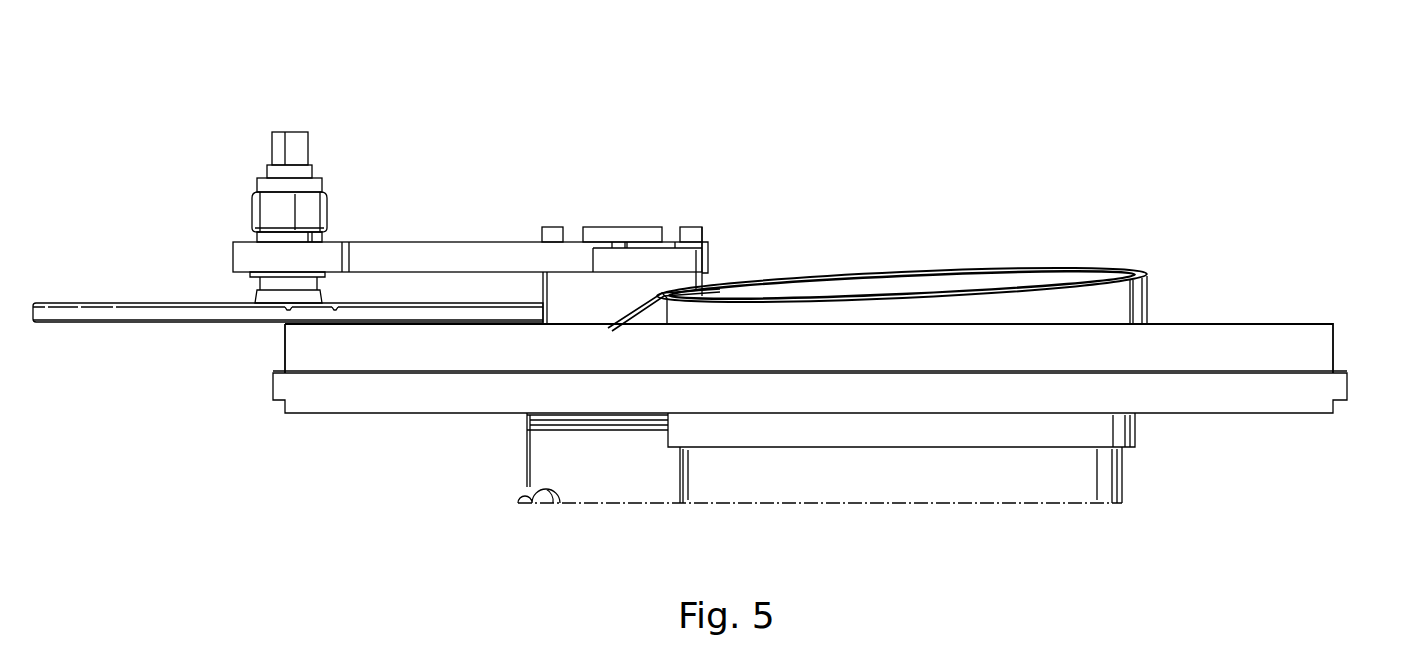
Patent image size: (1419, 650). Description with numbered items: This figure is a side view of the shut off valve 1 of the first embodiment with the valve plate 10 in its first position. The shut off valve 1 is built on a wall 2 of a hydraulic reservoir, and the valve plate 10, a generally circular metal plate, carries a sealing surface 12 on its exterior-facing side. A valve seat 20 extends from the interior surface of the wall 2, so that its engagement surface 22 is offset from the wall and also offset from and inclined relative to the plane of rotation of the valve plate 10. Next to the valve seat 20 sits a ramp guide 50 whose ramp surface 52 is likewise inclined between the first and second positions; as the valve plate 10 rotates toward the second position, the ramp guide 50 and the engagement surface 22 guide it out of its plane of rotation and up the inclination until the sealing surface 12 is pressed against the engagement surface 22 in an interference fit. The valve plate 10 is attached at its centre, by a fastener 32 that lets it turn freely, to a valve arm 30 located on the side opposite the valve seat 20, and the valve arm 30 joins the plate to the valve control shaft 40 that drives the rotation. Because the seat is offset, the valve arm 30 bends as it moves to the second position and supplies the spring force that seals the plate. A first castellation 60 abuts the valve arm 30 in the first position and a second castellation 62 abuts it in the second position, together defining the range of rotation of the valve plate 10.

The shut off valve 1 is at (1197, 134).
The wall 2 is at (1350, 349).
The valve plate 10 is at (124, 323).
The sealing surface 12 is at (219, 316).
The valve seat 20 is at (1148, 290).
The engagement surface 22 is at (1104, 260).
The valve arm 30 is at (453, 228).
The fastener 32 is at (293, 140).
The valve control shaft 40 is at (607, 226).
The ramp guide 50 is at (637, 294).
The ramp surface 52 is at (610, 327).
The first castellation 60 is at (716, 218).
The second castellation 62 is at (552, 225).